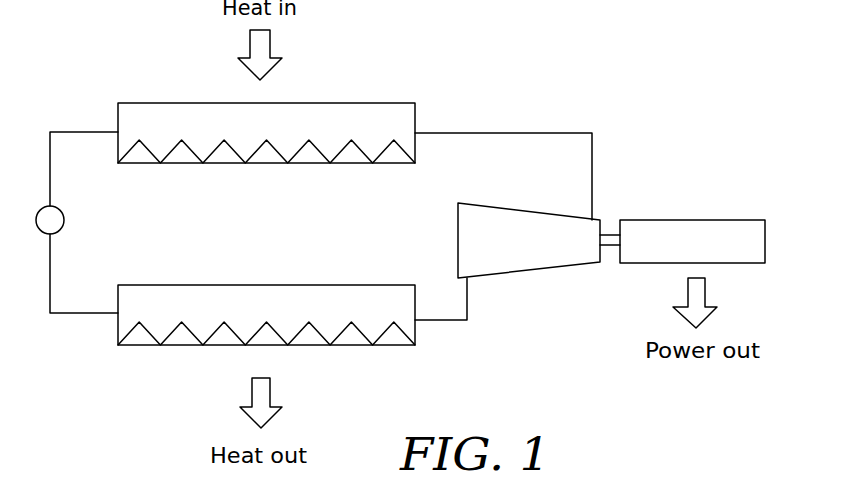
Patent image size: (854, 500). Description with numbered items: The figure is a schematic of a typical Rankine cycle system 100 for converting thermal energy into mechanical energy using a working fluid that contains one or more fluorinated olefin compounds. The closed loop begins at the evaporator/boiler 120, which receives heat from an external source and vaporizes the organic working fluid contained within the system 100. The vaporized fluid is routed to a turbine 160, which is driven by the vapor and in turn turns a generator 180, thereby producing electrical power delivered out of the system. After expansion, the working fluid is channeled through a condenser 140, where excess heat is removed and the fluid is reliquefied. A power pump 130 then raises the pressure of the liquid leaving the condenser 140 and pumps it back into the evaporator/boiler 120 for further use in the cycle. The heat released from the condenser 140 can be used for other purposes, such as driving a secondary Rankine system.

The Rankine cycle system 100 is at (520, 45).
The evaporator/boiler 120 is at (157, 102).
The power pump 130 is at (63, 220).
The condenser 140 is at (147, 347).
The turbine 160 is at (532, 258).
The generator 180 is at (695, 232).